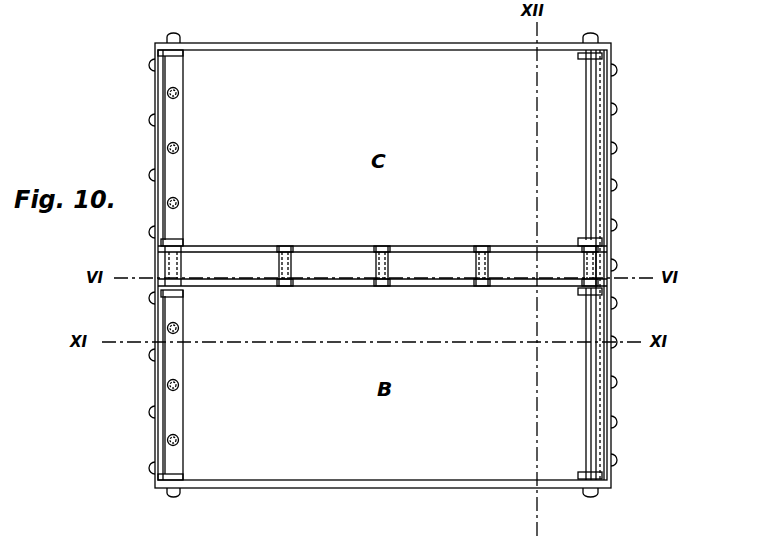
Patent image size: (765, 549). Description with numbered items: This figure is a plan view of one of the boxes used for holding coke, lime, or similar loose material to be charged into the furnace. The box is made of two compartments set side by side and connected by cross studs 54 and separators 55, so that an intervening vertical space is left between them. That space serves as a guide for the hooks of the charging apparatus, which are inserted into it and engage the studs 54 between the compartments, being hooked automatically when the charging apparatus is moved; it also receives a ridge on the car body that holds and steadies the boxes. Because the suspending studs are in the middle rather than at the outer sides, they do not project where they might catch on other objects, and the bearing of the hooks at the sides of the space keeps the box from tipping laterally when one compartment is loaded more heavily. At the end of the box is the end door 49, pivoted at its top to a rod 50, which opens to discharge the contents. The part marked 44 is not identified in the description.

The frame 44 is at (383, 256).
The end door 49 is at (612, 323).
The rod 50 is at (589, 172).
The cross studs 54 is at (293, 268).
The separators 55 is at (184, 268).